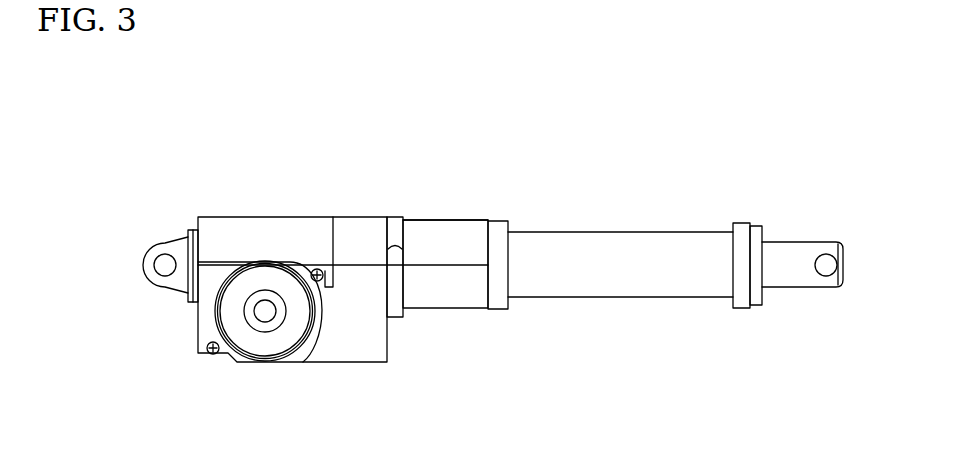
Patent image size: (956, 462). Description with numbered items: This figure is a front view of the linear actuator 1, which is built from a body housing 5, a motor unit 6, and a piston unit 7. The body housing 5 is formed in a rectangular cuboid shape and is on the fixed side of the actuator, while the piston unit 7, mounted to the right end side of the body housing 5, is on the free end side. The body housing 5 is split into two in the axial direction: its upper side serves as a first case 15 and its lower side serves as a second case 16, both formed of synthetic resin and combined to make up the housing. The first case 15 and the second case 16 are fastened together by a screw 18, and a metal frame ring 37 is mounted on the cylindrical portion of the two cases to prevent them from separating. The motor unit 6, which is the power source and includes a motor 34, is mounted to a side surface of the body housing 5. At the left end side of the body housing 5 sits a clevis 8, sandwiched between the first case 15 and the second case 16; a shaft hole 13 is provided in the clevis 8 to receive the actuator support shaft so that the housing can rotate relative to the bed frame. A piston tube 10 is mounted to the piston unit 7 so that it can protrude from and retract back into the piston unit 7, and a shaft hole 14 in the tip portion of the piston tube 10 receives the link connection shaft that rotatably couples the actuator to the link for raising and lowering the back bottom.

The linear actuator 1 is at (438, 201).
The body housing 5 is at (347, 338).
The motor unit 6 is at (252, 339).
The motor 34 is at (288, 338).
The clevis 8 is at (167, 242).
The shaft hole 13 is at (165, 268).
The screw 18 is at (395, 245).
The second case 16 is at (448, 292).
The first case 15 is at (470, 235).
The metal frame ring 37 is at (498, 309).
The piston unit 7 is at (669, 272).
The piston tube 10 is at (795, 258).
The shaft hole 14 is at (826, 270).